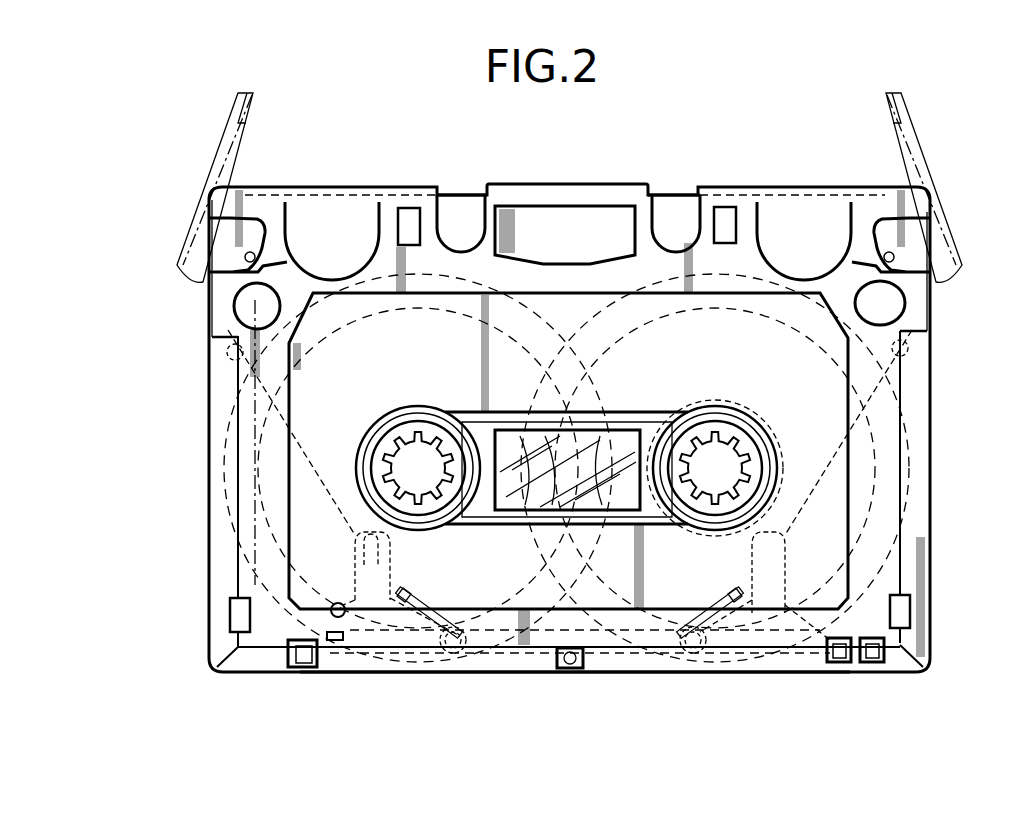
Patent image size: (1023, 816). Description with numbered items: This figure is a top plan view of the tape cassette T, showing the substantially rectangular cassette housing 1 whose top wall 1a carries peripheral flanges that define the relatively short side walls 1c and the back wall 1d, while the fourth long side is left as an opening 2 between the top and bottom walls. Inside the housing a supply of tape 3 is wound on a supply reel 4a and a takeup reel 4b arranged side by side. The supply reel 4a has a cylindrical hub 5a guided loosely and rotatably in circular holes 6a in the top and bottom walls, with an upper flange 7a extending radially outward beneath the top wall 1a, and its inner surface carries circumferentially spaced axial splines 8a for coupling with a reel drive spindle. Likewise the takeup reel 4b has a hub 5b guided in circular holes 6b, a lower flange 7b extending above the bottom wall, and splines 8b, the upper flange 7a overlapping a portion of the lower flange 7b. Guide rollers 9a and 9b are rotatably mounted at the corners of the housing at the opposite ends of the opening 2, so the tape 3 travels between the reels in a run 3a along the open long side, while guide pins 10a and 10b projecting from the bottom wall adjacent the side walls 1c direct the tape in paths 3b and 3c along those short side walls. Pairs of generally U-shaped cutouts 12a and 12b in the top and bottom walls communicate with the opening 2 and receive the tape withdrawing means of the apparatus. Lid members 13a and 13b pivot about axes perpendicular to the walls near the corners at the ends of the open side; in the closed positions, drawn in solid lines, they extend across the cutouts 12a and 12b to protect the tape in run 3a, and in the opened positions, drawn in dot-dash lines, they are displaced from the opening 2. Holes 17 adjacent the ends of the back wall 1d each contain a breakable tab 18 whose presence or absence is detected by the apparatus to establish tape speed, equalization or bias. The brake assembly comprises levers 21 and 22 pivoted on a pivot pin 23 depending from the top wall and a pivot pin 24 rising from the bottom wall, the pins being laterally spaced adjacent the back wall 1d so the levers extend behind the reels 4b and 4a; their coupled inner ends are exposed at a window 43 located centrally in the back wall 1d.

The cassette housing 1 is at (937, 494).
The top wall 1a is at (247, 577).
The side walls 1c is at (211, 488).
The back wall 1d is at (426, 672).
The opening 2 is at (465, 200).
The tape 3 is at (273, 462).
The run 3a is at (672, 196).
The path 3b is at (910, 292).
The path 3c is at (230, 298).
The supply reel 4a is at (885, 404).
The takeup reel 4b is at (232, 428).
The cylindrical hub 5a is at (760, 461).
The cylindrical hub 5b is at (381, 458).
The circular holes 6a is at (748, 428).
The circular holes 6b is at (399, 428).
The upper flange 7a is at (912, 440).
The lower flange 7b is at (234, 520).
The splines 8a is at (690, 440).
The splines 8b is at (434, 433).
The guide roller 9a is at (934, 195).
The guide roller 9b is at (231, 207).
The guide pin 10a is at (905, 347).
The guide pin 10b is at (232, 357).
The U-shaped cutout 12a is at (760, 220).
The U-shaped cutout 12b is at (377, 210).
The lid member 13a is at (822, 196).
The lid member 13b is at (315, 196).
The holes 17 is at (862, 663).
The breakable tab 18 is at (875, 664).
The lever 21 is at (432, 615).
The lever 22 is at (705, 606).
The pivot pin 23 is at (462, 663).
The pivot pin 24 is at (690, 665).
The window 43 is at (580, 664).
The tape cassette T is at (577, 183).